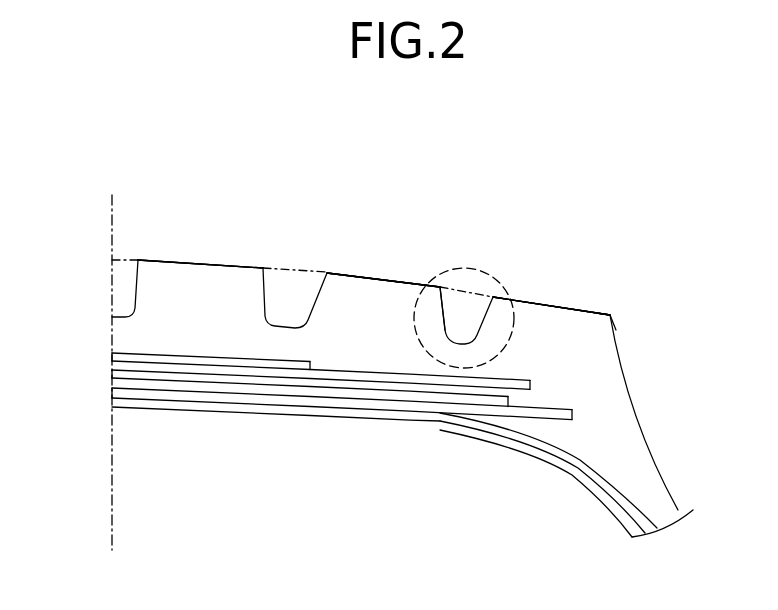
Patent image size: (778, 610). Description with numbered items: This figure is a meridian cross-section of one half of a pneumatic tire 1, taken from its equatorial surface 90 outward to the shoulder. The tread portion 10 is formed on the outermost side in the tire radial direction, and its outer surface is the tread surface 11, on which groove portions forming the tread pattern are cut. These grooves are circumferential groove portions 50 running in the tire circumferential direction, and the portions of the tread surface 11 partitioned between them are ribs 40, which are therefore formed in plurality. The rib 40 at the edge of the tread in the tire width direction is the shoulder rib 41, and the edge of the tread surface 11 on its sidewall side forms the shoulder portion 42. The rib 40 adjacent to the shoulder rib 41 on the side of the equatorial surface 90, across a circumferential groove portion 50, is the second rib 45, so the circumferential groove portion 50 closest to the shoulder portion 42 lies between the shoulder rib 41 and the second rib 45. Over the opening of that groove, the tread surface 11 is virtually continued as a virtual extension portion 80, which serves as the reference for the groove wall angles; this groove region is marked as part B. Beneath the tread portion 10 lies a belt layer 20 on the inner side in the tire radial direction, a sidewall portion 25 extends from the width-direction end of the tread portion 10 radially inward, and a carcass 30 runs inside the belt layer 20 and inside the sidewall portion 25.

The pneumatic tire 1 is at (355, 153).
The tread portion 10 is at (352, 322).
The tread surface 11 is at (427, 283).
The belt layer 20 is at (140, 353).
The sidewall portion 25 is at (642, 422).
The carcass 30 is at (348, 412).
The rib 40 is at (218, 287).
The shoulder rib 41 is at (572, 325).
The shoulder portion 42 is at (615, 314).
The second rib 45 is at (385, 310).
The circumferential groove portion 50 is at (270, 305).
The virtual extension portion 80 is at (468, 290).
The equatorial surface 90 is at (112, 217).
The part B is at (432, 368).